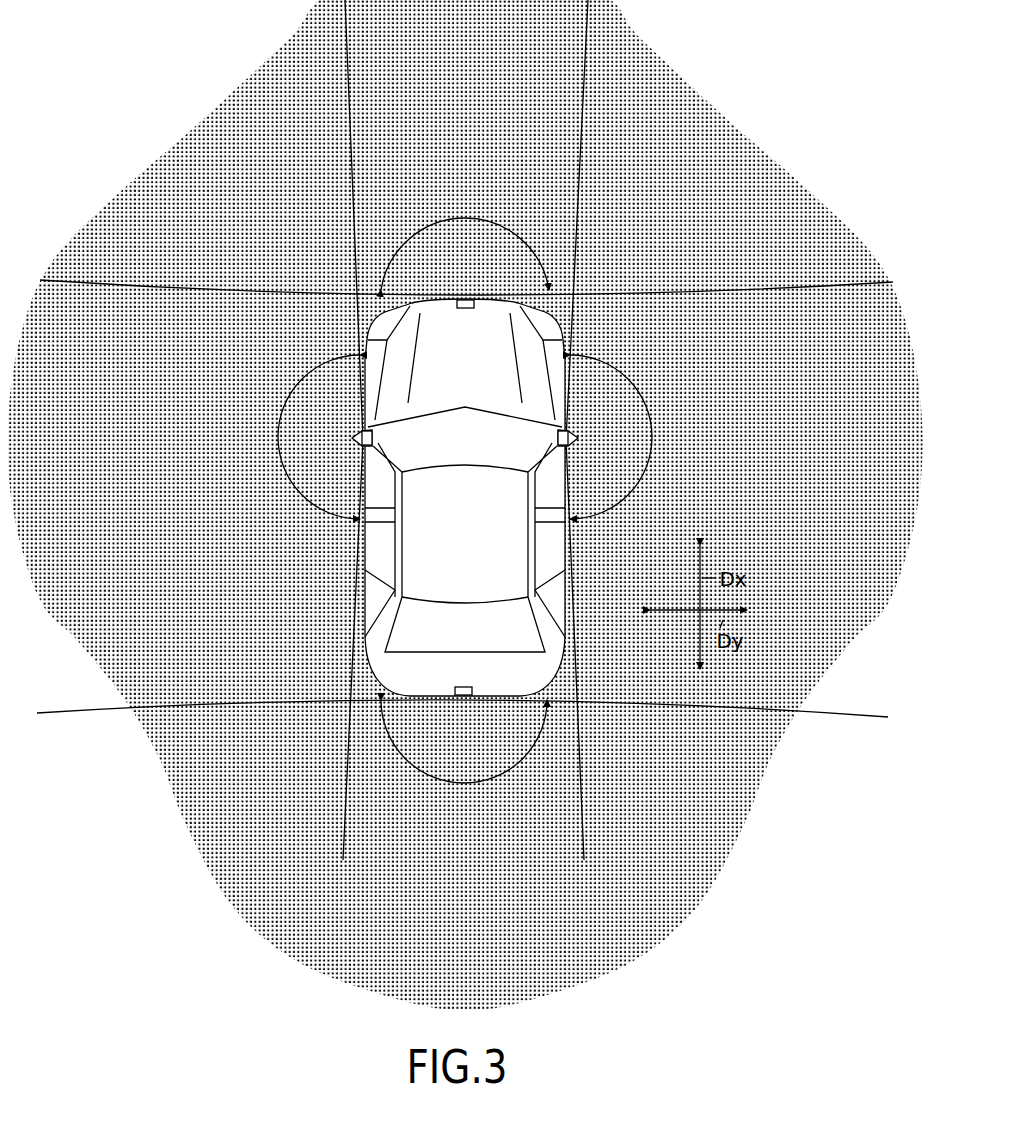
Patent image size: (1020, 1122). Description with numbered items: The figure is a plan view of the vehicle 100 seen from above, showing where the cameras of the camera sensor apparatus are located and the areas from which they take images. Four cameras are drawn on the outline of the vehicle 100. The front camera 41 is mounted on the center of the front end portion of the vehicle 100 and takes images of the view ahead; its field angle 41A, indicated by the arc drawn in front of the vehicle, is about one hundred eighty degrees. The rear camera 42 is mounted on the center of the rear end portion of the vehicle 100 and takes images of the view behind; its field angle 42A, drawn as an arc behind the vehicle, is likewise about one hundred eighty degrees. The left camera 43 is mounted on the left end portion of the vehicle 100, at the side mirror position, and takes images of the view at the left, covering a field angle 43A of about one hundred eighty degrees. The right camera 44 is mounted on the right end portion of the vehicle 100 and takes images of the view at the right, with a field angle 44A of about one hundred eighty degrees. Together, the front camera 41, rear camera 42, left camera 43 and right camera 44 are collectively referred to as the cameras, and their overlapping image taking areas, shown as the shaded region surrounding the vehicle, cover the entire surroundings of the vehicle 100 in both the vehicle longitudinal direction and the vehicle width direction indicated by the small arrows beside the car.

The vehicle 100 is at (565, 542).
The front camera 41 is at (465, 308).
The rear camera 42 is at (463, 687).
The left camera 43 is at (374, 437).
The right camera 44 is at (556, 437).
The field angle of the front camera 41A is at (465, 241).
The field angle of the rear camera 42A is at (464, 751).
The field angle of the left camera 43A is at (300, 437).
The field angle of the right camera 44A is at (629, 437).